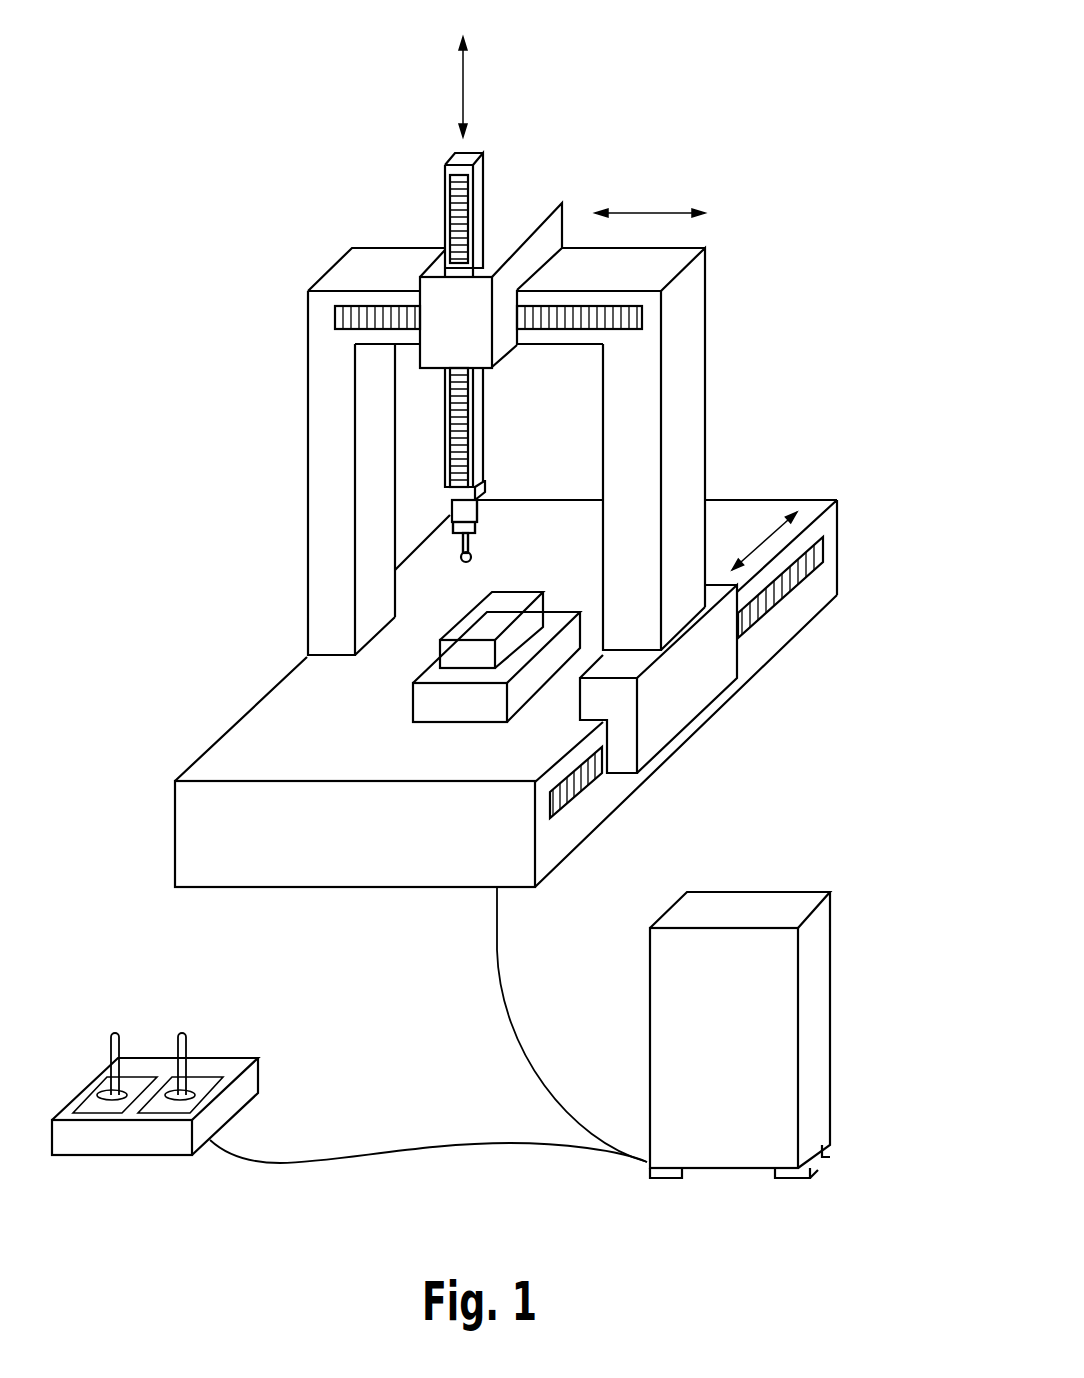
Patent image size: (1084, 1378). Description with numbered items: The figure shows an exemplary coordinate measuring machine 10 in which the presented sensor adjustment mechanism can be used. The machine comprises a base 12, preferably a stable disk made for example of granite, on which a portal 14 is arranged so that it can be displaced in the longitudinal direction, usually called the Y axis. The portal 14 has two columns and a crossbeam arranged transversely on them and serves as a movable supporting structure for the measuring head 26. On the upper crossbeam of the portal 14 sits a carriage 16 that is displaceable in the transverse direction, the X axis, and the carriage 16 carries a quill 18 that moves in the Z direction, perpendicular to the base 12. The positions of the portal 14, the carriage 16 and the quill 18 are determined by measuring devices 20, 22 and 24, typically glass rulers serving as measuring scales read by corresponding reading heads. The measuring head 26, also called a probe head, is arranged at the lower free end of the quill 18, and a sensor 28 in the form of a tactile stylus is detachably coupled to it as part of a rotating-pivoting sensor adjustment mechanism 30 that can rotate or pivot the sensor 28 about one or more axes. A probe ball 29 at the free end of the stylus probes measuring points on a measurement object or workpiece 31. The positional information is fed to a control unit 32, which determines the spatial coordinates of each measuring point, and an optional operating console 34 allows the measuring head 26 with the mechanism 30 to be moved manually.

The coordinate measuring machine 10 is at (735, 218).
The base 12 is at (243, 758).
The portal 14 is at (328, 410).
The carriage 16 is at (437, 267).
The quill 18 is at (460, 153).
The measuring device 20 is at (763, 597).
The measuring device 22 is at (643, 315).
The measuring device 24 is at (463, 200).
The measuring head 26 is at (472, 510).
The sensor 28 is at (462, 550).
The probe ball 29 is at (473, 553).
The sensor adjustment mechanism 30 is at (477, 540).
The measurement object 31 is at (493, 615).
The control unit 32 is at (737, 910).
The operating console 34 is at (233, 1048).